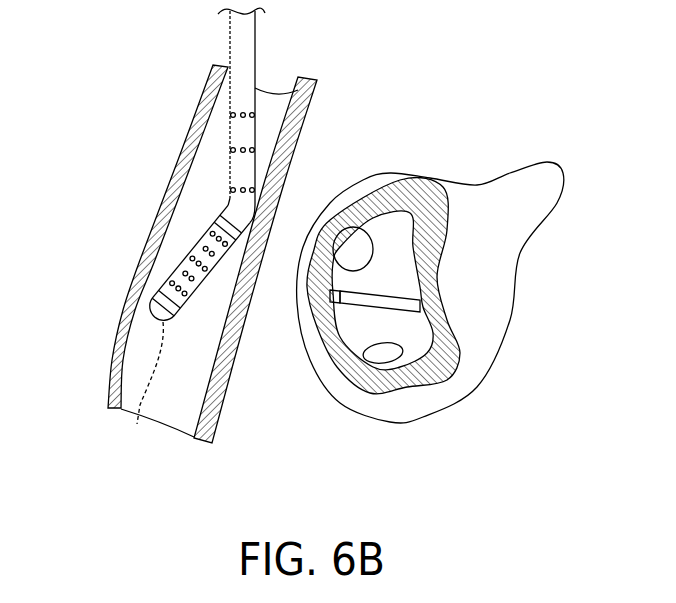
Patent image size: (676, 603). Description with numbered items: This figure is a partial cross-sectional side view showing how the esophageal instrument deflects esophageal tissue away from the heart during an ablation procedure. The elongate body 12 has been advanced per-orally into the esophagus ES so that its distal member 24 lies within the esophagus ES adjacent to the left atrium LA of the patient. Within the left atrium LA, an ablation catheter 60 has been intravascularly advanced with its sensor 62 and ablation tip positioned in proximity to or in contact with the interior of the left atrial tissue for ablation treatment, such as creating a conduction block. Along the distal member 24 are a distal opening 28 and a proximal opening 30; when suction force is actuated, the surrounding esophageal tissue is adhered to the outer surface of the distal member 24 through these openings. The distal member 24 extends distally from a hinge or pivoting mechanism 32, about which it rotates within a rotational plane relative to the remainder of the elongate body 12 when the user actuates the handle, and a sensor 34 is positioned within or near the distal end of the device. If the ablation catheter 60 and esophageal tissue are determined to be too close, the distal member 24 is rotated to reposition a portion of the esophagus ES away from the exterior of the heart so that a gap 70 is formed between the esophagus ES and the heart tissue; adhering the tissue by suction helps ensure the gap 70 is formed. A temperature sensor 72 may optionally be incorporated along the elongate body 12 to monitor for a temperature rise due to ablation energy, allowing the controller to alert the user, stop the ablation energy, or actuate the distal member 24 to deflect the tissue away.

The elongate body 12 is at (257, 53).
The distal member 24 is at (150, 275).
The distal opening 28 is at (156, 276).
The proximal opening 30 is at (219, 99).
The hinge or pivoting mechanism 32 is at (228, 198).
The sensor 34 is at (150, 311).
The ablation catheter 60 is at (357, 374).
The sensor 62 is at (333, 303).
The gap 70 is at (427, 291).
The temperature sensor 72 is at (142, 388).
The esophagus ES is at (207, 252).
The left atrium LA is at (408, 218).